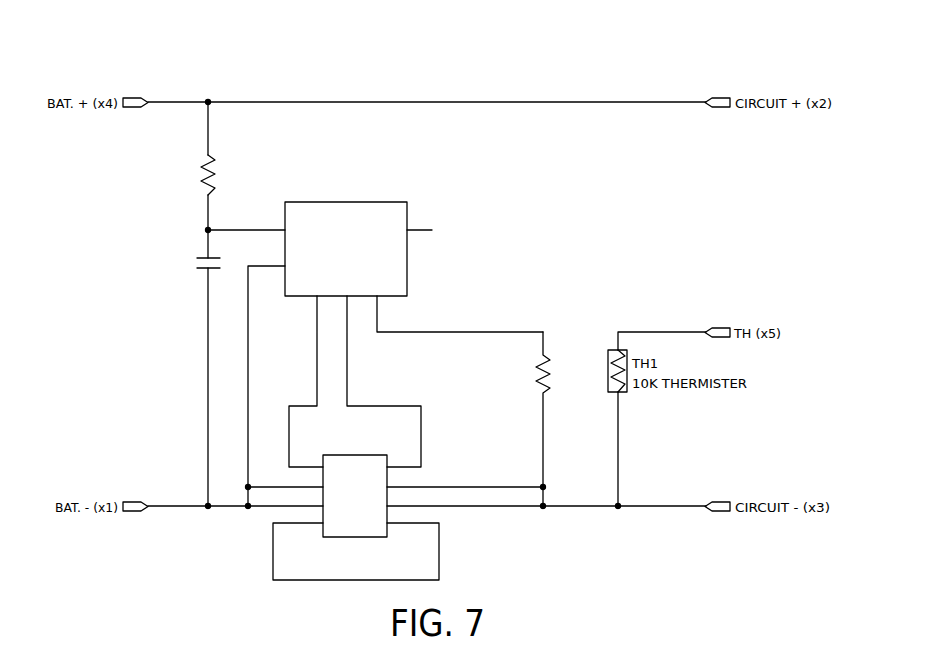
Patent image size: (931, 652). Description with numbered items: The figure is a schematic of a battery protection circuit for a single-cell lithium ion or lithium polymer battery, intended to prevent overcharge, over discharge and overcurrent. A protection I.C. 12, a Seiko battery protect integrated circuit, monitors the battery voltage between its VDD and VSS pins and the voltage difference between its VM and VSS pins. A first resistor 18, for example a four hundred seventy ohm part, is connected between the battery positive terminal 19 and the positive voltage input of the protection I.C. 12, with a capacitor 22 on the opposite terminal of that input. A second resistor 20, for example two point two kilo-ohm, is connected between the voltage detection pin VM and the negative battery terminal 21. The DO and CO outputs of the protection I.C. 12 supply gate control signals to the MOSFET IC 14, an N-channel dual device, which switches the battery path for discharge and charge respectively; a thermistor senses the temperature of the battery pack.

The protection I.C. 12 is at (355, 251).
The MOSFET IC 14 is at (354, 470).
The resistor 18 is at (212, 160).
The battery positive terminal 19 is at (131, 97).
The resistor 20 is at (545, 356).
The negative battery terminal 21 is at (137, 501).
The capacitor 22 is at (205, 258).